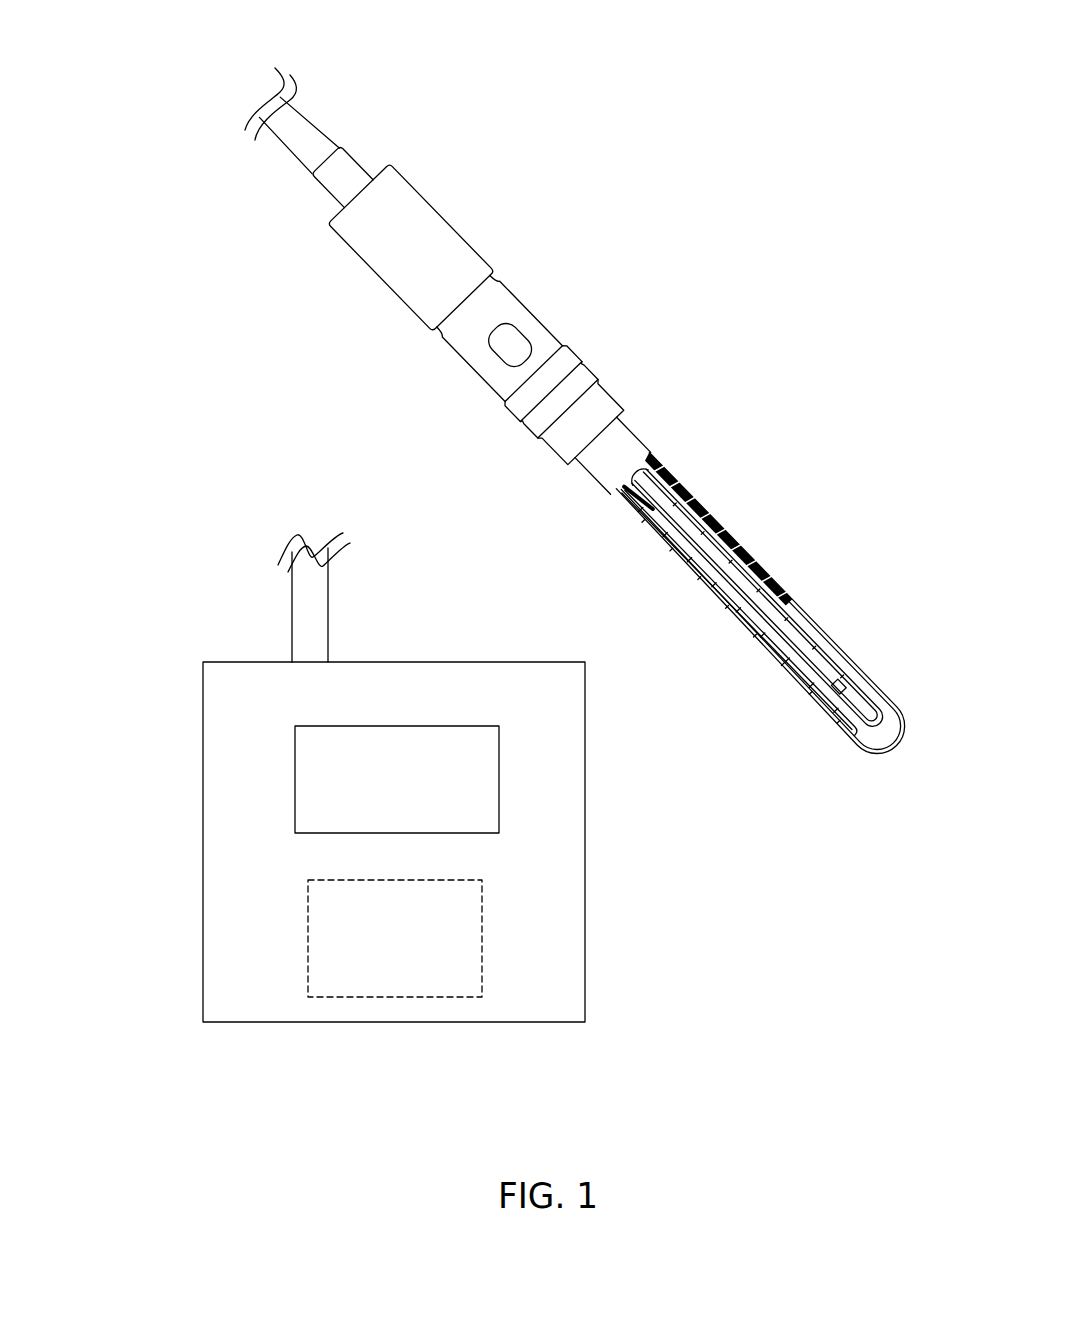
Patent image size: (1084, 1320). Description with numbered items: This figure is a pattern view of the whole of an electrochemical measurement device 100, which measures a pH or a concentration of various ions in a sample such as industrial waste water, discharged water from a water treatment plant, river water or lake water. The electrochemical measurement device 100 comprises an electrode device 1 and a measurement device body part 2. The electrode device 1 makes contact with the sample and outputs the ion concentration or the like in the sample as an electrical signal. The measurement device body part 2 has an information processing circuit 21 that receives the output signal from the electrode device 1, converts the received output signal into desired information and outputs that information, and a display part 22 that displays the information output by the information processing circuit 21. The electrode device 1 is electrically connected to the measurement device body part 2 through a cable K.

The electrochemical measurement device 100 is at (613, 197).
The electrode device 1 is at (728, 462).
The measurement device body part 2 is at (585, 968).
The information processing circuit 21 is at (308, 942).
The display part 22 is at (295, 775).
The cable K is at (313, 127).